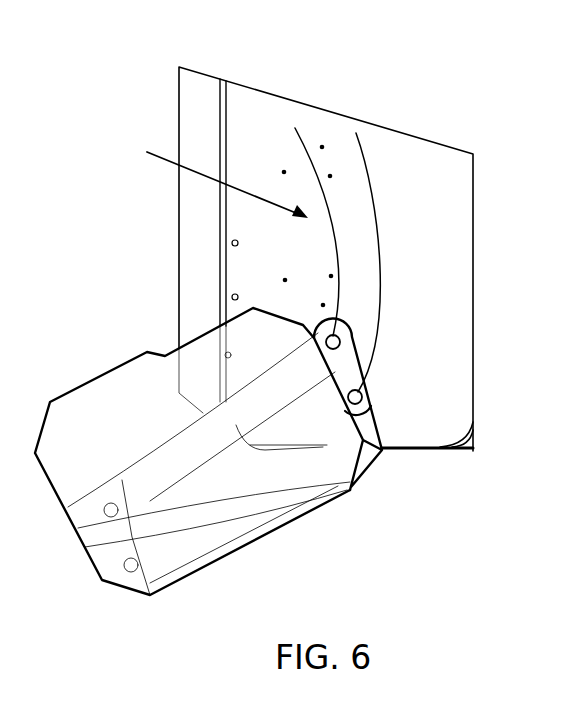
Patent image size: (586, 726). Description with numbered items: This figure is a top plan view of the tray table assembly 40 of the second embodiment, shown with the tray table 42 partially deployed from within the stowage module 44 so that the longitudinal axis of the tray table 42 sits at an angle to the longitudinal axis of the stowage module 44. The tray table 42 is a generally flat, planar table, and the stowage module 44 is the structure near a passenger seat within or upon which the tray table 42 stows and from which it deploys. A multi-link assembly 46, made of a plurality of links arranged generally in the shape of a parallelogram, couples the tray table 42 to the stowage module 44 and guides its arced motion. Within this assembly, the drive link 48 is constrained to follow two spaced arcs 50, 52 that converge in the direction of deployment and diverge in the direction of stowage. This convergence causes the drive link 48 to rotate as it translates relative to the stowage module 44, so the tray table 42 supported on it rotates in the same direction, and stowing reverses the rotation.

The tray table assembly 40 is at (427, 57).
The tray table 42 is at (82, 400).
The stowage module 44 is at (443, 167).
The multi-link assembly 46 is at (372, 467).
The drive link 48 is at (367, 391).
The first arc 50 is at (303, 138).
The second arc 52 is at (364, 127).